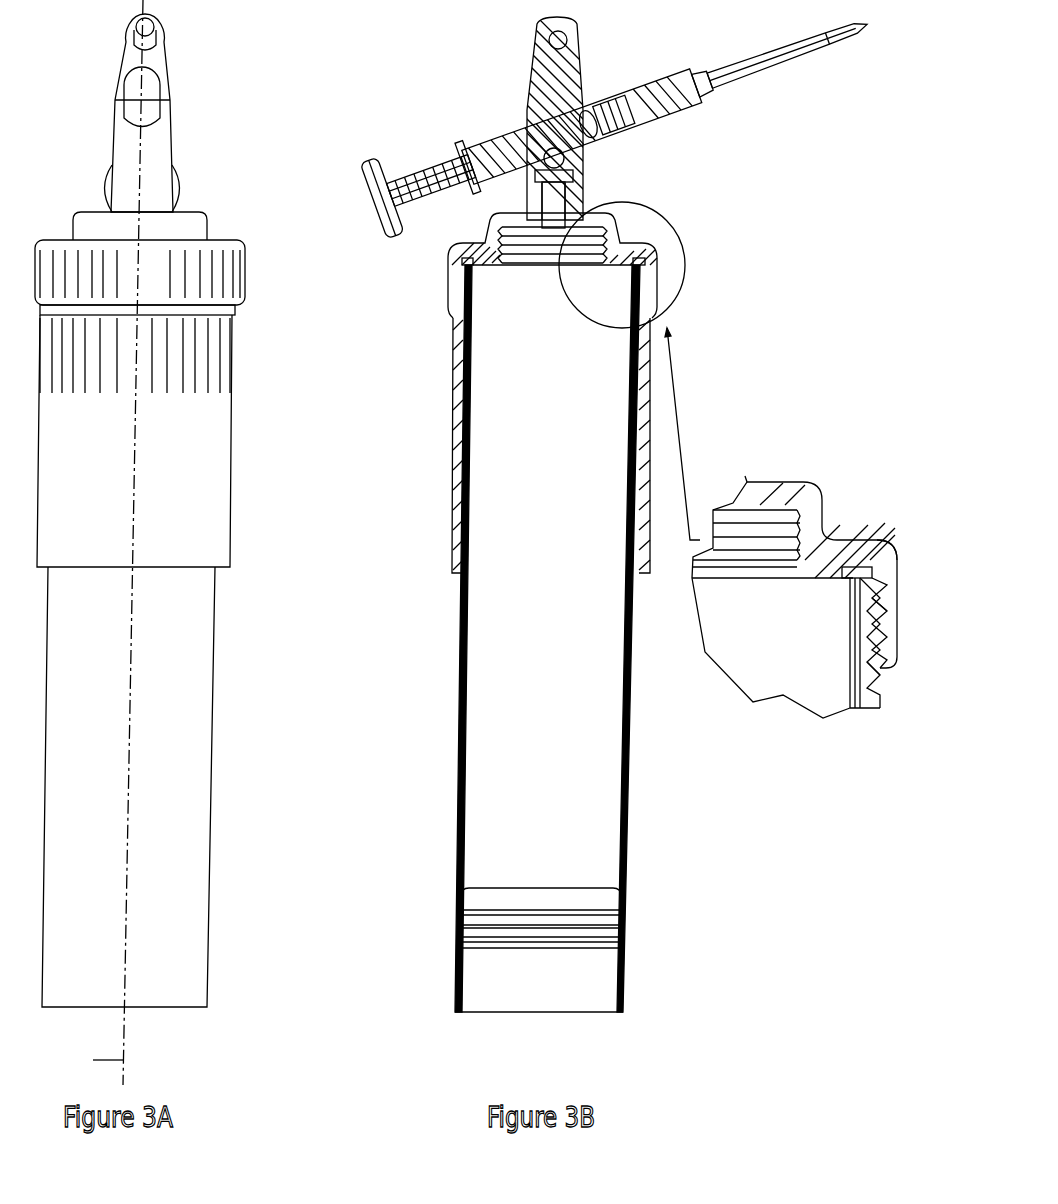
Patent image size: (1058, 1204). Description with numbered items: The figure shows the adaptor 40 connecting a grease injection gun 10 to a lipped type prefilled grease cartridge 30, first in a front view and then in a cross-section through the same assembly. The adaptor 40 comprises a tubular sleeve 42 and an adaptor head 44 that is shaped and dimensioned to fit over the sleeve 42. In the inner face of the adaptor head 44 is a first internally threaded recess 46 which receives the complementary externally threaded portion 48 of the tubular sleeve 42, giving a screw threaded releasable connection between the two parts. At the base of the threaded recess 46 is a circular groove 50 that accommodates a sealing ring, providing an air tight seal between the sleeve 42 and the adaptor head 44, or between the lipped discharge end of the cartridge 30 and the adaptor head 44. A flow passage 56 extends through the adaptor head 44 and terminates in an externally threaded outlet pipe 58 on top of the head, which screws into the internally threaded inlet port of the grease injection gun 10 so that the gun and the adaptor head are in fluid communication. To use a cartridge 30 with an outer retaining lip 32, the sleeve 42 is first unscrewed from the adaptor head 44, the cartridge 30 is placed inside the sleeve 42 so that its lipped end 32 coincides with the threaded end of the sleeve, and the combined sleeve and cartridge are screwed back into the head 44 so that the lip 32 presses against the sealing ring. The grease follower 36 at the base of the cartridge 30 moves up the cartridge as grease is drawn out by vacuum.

In FIG. 3A, the grease injection gun 10 is at (172, 118).
In FIG. 3B, the grease injection gun 10 is at (528, 90).
In FIG. 3A, the grease cartridge 30 is at (182, 722).
In FIG. 3B, the grease cartridge 30 is at (507, 727).
In FIG. 3B, the outer retaining lip 32 is at (853, 560).
In FIG. 3B, the grease follower 36 is at (587, 903).
In FIG. 3B, the adaptor 40 is at (755, 460).
In FIG. 3A, the tubular sleeve 42 is at (190, 480).
In FIG. 3B, the tubular sleeve 42 is at (453, 480).
In FIG. 3A, the adaptor head 44 is at (213, 250).
In FIG. 3B, the adaptor head 44 is at (478, 268).
In FIG. 3B, the first internally threaded recess 46 is at (875, 610).
In FIG. 3B, the externally threaded portion 48 is at (877, 680).
In FIG. 3B, the circular groove 50 is at (865, 583).
In FIG. 3B, the flow passage 56 is at (553, 203).
In FIG. 3B, the externally threaded outlet pipe 58 is at (580, 187).